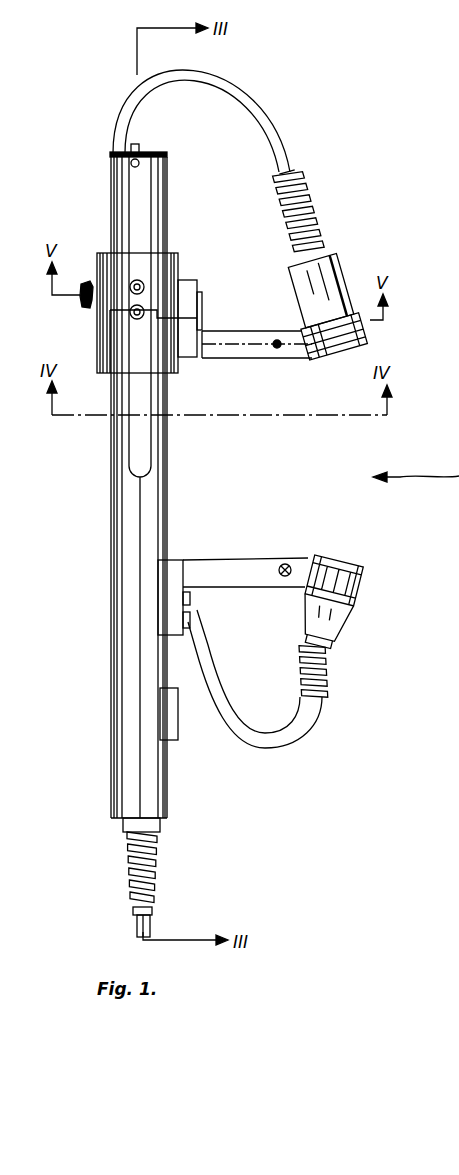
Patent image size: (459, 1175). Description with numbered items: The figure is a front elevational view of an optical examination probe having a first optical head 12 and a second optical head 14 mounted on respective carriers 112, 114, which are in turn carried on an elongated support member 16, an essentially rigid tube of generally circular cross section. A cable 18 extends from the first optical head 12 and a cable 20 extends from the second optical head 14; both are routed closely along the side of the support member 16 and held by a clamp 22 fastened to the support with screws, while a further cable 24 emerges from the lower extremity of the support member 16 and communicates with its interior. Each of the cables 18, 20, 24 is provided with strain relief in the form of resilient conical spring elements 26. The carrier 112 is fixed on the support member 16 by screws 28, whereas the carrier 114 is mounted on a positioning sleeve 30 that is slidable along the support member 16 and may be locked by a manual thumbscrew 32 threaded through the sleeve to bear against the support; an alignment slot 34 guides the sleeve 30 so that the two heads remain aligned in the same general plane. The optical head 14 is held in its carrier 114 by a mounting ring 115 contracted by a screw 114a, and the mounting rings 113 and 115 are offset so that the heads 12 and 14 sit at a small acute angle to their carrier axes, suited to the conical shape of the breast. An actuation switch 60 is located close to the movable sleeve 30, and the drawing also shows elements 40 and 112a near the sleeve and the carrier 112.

The first optical head 12 is at (342, 631).
The second optical head 14 is at (336, 263).
The elongated support member 16 is at (158, 490).
The cable or conductor 18 is at (267, 731).
The cable or conductor 20 is at (225, 78).
The clamp 22 is at (170, 724).
The cable or conductor 24 is at (150, 926).
The resilient conical spring elements 26 is at (300, 190).
The screws 28 is at (187, 620).
The positioning sleeve 30 is at (172, 253).
The manual thumbscrew 32 is at (83, 309).
The alignment slot 34 is at (140, 438).
The screws 40 is at (134, 280).
The actuation switch 60 is at (137, 144).
The carrier 112 is at (233, 568).
The pivot screw 112a is at (288, 564).
The mounting ring 113 is at (368, 584).
The carrier 114 is at (266, 296).
The screw 114a is at (277, 350).
The mounting ring 115 is at (366, 343).